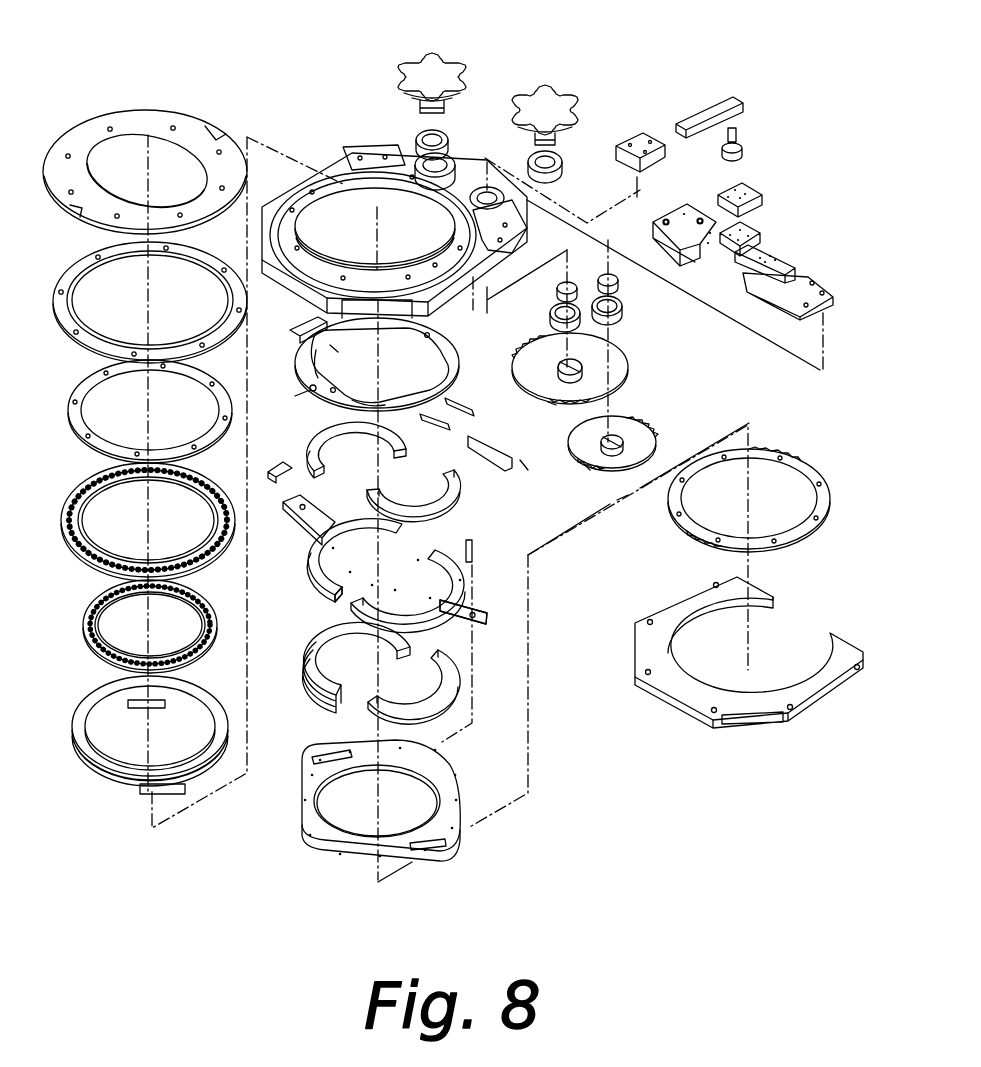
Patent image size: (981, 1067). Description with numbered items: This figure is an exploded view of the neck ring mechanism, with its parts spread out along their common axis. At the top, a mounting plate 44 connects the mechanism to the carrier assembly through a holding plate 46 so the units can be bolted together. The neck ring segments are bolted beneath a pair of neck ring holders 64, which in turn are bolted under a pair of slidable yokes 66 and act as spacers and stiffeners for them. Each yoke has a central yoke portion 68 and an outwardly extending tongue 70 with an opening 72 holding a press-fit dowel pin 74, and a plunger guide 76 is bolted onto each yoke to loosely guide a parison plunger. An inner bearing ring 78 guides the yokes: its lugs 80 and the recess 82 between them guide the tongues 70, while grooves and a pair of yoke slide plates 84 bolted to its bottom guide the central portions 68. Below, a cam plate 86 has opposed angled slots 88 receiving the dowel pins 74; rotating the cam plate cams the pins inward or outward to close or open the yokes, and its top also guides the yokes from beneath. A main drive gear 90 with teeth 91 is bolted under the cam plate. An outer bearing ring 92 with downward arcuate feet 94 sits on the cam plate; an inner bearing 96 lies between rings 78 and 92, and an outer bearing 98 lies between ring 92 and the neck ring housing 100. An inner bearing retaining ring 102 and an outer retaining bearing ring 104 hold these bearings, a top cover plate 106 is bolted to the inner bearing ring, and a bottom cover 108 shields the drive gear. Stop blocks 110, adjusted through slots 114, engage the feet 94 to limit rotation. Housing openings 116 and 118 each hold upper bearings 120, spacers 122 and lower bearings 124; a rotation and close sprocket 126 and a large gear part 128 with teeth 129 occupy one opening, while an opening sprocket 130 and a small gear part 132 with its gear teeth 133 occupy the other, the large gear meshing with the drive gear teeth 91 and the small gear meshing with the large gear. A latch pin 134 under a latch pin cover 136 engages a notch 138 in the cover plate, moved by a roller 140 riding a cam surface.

The mounting plate 44 is at (782, 258).
The holding plate 46 is at (762, 199).
The neck ring holders 64 is at (352, 708).
The slidable yokes 66 is at (346, 596).
The central yoke portion 68 is at (398, 600).
The tongue 70 is at (305, 530).
The opening 72 is at (476, 626).
The dowel pin 74 is at (474, 553).
The plunger guide 76 is at (404, 495).
The inner bearing ring 78 is at (452, 348).
The lugs 80 is at (300, 326).
The recess 82 is at (322, 343).
The yoke slide plates 84 is at (522, 470).
The cam plate 86 is at (452, 768).
The slots 88 is at (336, 763).
The main drive gear 90 is at (830, 498).
The teeth 91 is at (696, 545).
The outer bearing ring 92 is at (106, 681).
The arcuate feet 94 is at (155, 702).
The inner bearing 96 is at (86, 613).
The outer bearing 98 is at (80, 494).
The neck ring housing 100 is at (376, 210).
The inner bearing retaining ring 102 is at (76, 392).
The outer retaining bearing ring 104 is at (72, 272).
The top cover plate 106 is at (143, 112).
The bottom cover 108 is at (808, 695).
The stop blocks 110 is at (276, 460).
The slots 114 is at (312, 398).
The opening 116 is at (452, 172).
The opening 118 is at (454, 226).
The upper bearings 120 is at (425, 133).
The spacers 122 is at (558, 290).
The lower bearings 124 is at (580, 316).
The rotation and close sprocket 126 is at (427, 60).
The large gear part 128 is at (618, 368).
The teeth 129 is at (558, 408).
The opening sprocket 130 is at (545, 90).
The small gear part 132 is at (655, 440).
The gear teeth 133 is at (590, 468).
The latch pin 134 is at (702, 116).
The latch pin cover 136 is at (635, 133).
The notch 138 is at (217, 126).
The roller 140 is at (745, 150).